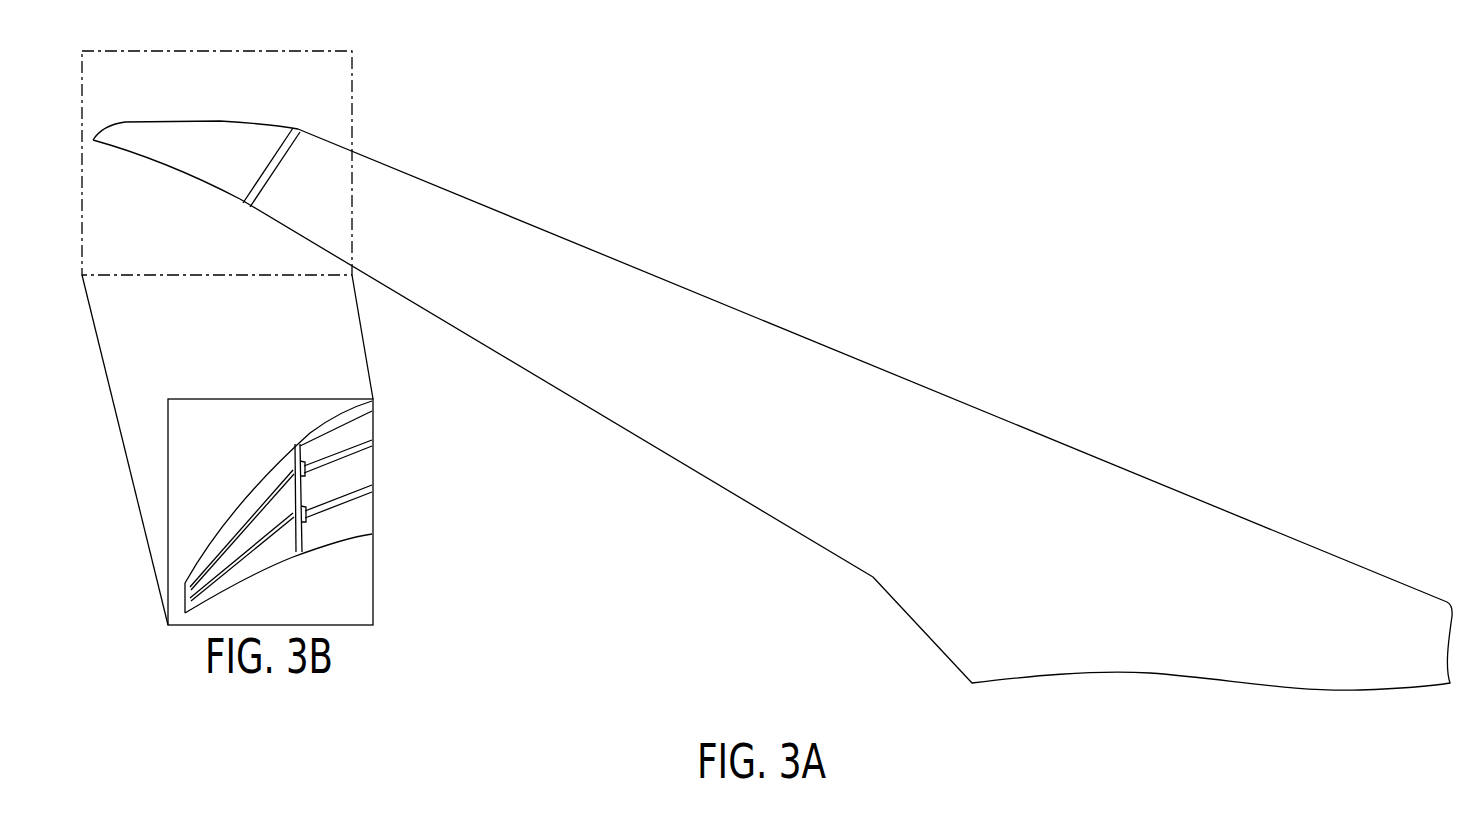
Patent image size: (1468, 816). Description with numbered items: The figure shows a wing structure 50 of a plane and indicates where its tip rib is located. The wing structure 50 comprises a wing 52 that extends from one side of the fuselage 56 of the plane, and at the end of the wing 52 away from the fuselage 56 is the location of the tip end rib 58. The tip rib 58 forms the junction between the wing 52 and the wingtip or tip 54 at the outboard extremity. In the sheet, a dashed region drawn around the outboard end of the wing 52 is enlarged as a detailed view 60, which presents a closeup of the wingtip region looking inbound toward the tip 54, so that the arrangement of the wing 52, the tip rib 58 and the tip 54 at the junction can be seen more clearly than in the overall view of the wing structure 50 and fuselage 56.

In FIG. 3A, the wing structure 50 is at (748, 77).
In FIG. 3A, the wing 52 is at (772, 284).
In FIG. 3A, the tip 54 is at (258, 122).
In FIG. 3A, the fuselage 56 is at (826, 718).
In FIG. 3A, the tip end rib 58 is at (298, 128).
In FIG. 3B, the detailed view 60 is at (335, 392).